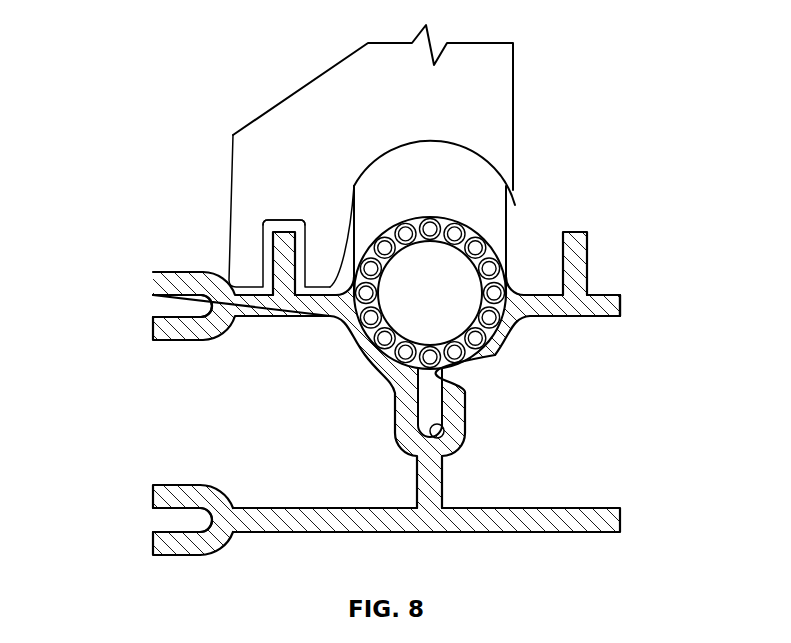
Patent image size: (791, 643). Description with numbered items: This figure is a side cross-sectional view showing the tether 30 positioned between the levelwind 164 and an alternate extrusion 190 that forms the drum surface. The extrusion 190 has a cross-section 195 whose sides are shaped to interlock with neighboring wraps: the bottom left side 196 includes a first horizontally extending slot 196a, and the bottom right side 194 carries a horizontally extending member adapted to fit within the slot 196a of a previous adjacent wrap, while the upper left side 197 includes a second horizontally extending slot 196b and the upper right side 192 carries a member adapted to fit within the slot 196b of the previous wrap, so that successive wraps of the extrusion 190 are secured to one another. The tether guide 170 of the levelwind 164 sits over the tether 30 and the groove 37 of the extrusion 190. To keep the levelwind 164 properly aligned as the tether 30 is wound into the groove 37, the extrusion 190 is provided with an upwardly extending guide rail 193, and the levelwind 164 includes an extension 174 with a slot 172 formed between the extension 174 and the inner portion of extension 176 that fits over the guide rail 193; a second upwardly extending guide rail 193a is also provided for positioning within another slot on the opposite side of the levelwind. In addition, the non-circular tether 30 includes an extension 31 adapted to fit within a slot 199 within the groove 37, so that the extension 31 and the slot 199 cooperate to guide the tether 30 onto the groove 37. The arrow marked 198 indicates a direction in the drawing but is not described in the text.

The levelwind 164 is at (358, 73).
The tether guide 170 is at (427, 143).
The slot 172 is at (280, 223).
The extension 174 is at (247, 270).
The inner portion of extension 176 is at (322, 267).
The tether 30 is at (510, 227).
The groove 37 is at (467, 370).
The extension 31 is at (427, 398).
The cross-section 195 is at (450, 433).
The slot 199 is at (442, 430).
The guide rail 193 is at (283, 248).
The second guide rail 193a is at (573, 253).
The upper right side 192 is at (610, 307).
The extrusion 190 is at (633, 305).
The upper left side 197 is at (177, 283).
The second horizontally extending slot 196b is at (167, 305).
The flow path 198 is at (298, 420).
The bottom left side 196 is at (177, 498).
The first horizontally extending slot 196a is at (167, 520).
The bottom right side 194 is at (597, 533).